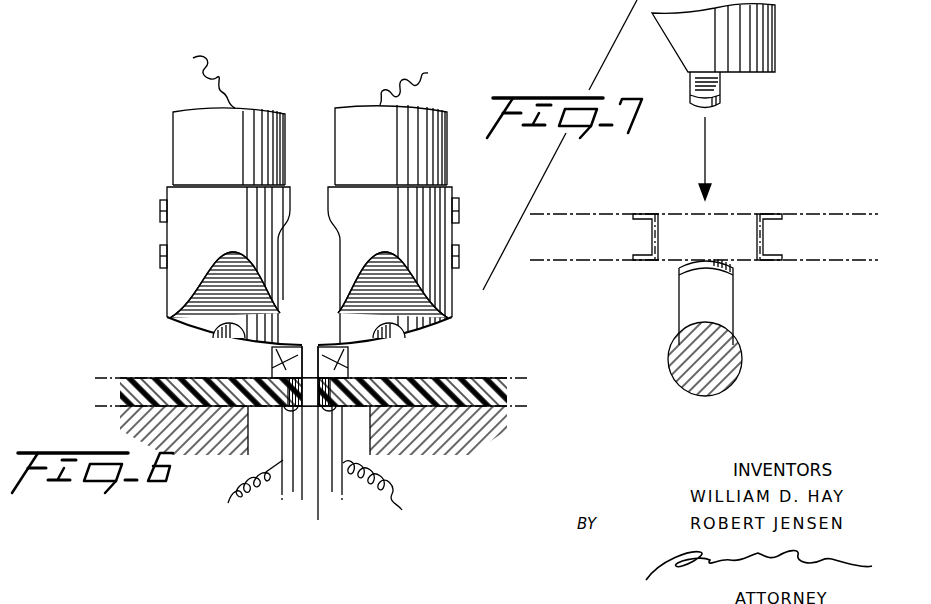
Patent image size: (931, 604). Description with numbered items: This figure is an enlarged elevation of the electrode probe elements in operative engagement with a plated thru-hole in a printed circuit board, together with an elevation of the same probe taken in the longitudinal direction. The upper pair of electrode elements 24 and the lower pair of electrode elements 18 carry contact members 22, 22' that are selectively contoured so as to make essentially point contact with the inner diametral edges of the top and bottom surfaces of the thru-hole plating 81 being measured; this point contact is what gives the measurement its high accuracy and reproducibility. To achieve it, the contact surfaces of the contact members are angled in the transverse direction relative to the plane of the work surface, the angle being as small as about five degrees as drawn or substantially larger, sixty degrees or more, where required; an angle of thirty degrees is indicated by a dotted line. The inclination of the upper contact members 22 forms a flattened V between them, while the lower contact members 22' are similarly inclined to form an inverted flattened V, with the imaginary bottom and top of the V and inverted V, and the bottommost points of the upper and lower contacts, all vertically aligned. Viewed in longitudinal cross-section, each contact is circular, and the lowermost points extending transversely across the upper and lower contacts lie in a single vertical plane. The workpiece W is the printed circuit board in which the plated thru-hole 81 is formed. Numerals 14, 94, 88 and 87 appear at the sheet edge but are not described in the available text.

In FIG. 6, the frame member 14 is at (214, 0).
In FIG. 6, the link 94 is at (366, 0).
In FIG. 6, the lever 88 is at (434, 0).
In FIG. 6, the pivot 87 is at (514, 0).
In FIG. 6, the upper pair of electrode elements 24 is at (165, 227).
In FIG. 7, the upper pair of electrode elements 24 is at (777, 35).
In FIG. 6, the contact member 22 is at (310, 324).
In FIG. 7, the contact member 22 is at (734, 95).
In FIG. 6, the contact member 22' is at (322, 475).
In FIG. 7, the contact member 22' is at (751, 302).
In FIG. 6, the thru-hole plating 81 is at (335, 384).
In FIG. 7, the thru-hole plating 81 is at (758, 213).
In FIG. 6, the lower pair of electrode elements 18 is at (309, 476).
In FIG. 7, the lower pair of electrode elements 18 is at (670, 343).
In FIG. 6, the workpiece W is at (455, 380).
In FIG. 7, the workpiece W is at (588, 214).